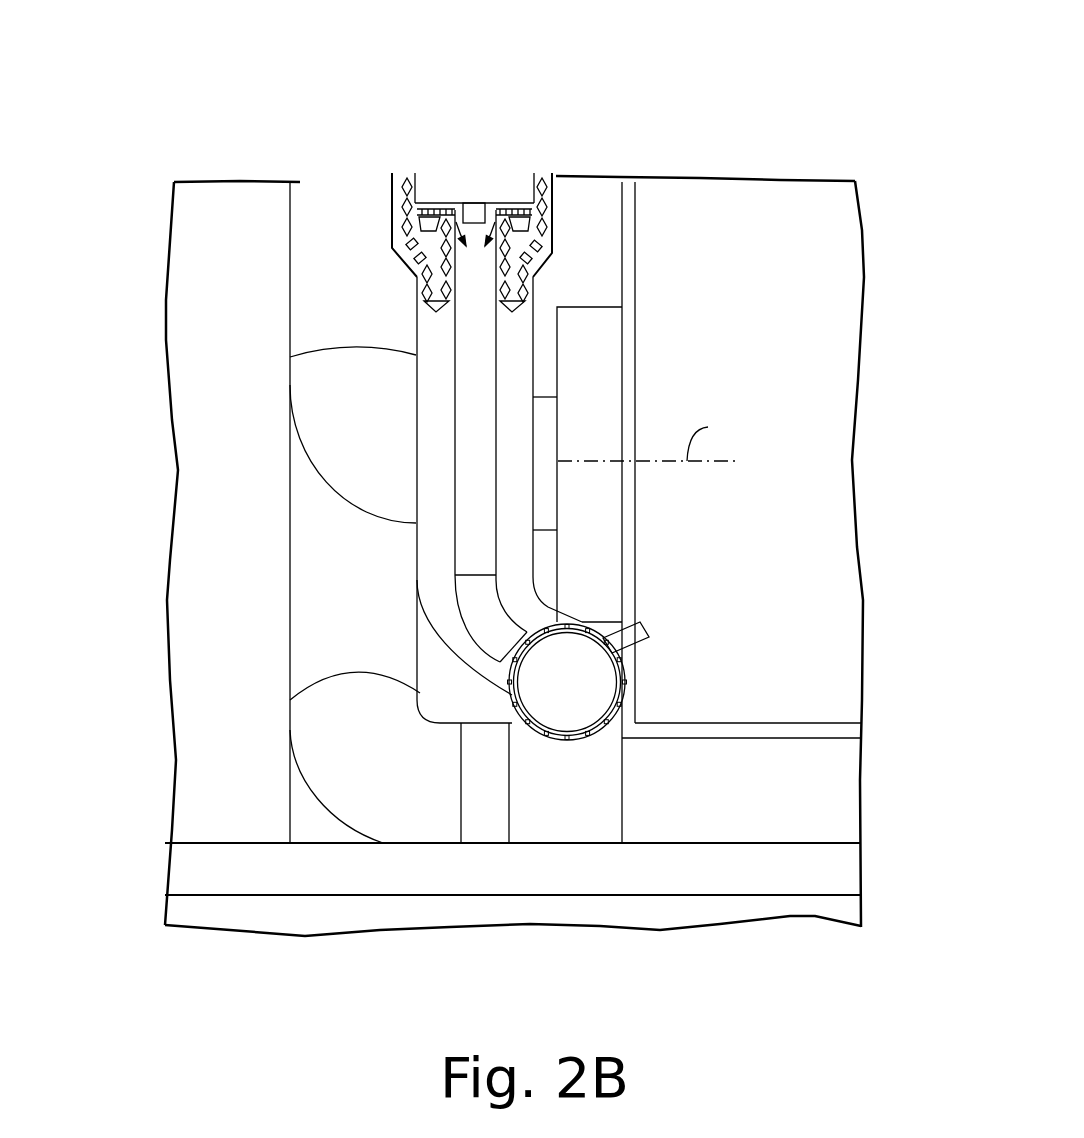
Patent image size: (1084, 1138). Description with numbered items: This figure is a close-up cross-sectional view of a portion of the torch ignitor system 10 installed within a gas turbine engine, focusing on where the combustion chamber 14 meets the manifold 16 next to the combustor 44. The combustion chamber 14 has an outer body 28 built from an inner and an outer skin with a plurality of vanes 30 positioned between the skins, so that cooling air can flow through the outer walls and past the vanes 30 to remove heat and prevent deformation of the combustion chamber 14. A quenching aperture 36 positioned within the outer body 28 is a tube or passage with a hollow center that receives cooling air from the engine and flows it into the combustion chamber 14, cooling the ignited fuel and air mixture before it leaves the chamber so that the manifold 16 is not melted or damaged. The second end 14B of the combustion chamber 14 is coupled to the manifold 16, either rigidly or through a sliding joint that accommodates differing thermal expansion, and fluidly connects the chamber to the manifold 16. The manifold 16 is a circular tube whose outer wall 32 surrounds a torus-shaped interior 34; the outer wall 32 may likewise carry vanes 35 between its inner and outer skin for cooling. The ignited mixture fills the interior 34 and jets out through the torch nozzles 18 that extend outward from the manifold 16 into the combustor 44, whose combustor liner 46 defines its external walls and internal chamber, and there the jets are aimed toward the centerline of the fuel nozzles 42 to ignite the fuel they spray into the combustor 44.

The torch ignitor system 10 is at (646, 67).
The combustion chamber 14 is at (400, 436).
The second end 14B is at (407, 610).
The manifold 16 is at (565, 750).
The torch nozzles 18 is at (658, 627).
The outer body 28 is at (435, 386).
The vanes 30 is at (407, 205).
The outer wall 32 is at (613, 809).
The interior 34 is at (410, 824).
The vanes 35 is at (307, 694).
The quenching aperture 36 is at (518, 213).
The fuel nozzles 42 is at (605, 337).
The combustor 44 is at (802, 235).
The combustor liner 46 is at (632, 207).